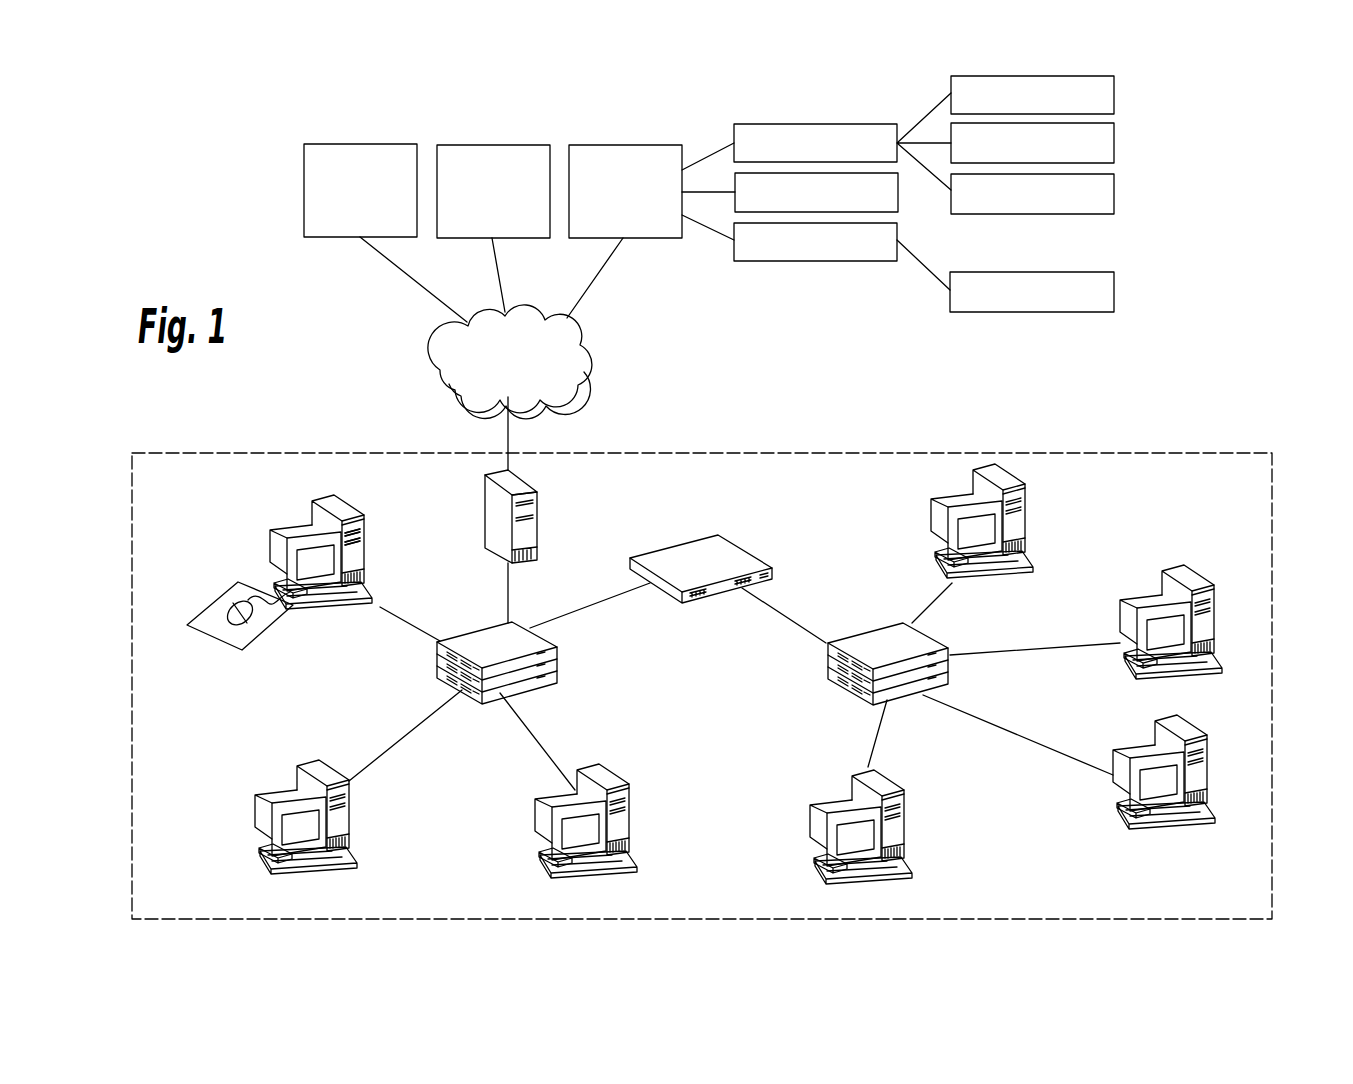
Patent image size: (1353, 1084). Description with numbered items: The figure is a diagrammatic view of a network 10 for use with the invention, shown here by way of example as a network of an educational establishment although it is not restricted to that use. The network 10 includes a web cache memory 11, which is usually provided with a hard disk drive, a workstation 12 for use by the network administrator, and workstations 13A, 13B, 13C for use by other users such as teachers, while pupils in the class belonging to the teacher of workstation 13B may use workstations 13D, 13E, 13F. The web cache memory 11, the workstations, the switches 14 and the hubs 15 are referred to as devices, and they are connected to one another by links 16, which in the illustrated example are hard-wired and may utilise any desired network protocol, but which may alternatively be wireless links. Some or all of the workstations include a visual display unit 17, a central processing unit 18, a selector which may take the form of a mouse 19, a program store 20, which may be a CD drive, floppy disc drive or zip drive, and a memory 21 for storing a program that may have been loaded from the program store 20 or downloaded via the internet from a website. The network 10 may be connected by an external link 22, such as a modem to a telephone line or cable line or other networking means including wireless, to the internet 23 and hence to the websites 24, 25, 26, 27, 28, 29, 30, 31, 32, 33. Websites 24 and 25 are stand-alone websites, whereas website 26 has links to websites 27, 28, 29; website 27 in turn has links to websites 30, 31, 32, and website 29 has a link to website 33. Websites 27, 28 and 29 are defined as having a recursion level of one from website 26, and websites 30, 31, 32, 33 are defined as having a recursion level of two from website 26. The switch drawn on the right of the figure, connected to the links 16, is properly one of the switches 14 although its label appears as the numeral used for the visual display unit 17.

The network 10 is at (702, 686).
The web cache memory 11 is at (537, 510).
The workstation 12 is at (306, 571).
The workstation 13A is at (322, 880).
The workstation 13B is at (600, 882).
The workstation 13C is at (875, 888).
The workstation 13D is at (1003, 578).
The workstation 13E is at (1187, 680).
The workstation 13F is at (1183, 832).
The switch 14 is at (555, 668).
The hub 15 is at (683, 542).
The link 16 is at (400, 614).
The visual display unit 17 is at (838, 683).
The central processing unit 18 is at (347, 508).
The mouse 19 is at (235, 613).
The program store 20 is at (365, 532).
The memory 21 is at (362, 563).
The external link 22 is at (509, 441).
The internet 23 is at (522, 369).
The website 24 is at (360, 190).
The website 25 is at (493, 191).
The website 26 is at (625, 191).
The website 27 is at (815, 143).
The website 28 is at (816, 192).
The website 29 is at (815, 242).
The website 30 is at (1032, 95).
The website 31 is at (1032, 143).
The website 32 is at (1032, 194).
The website 33 is at (1032, 292).